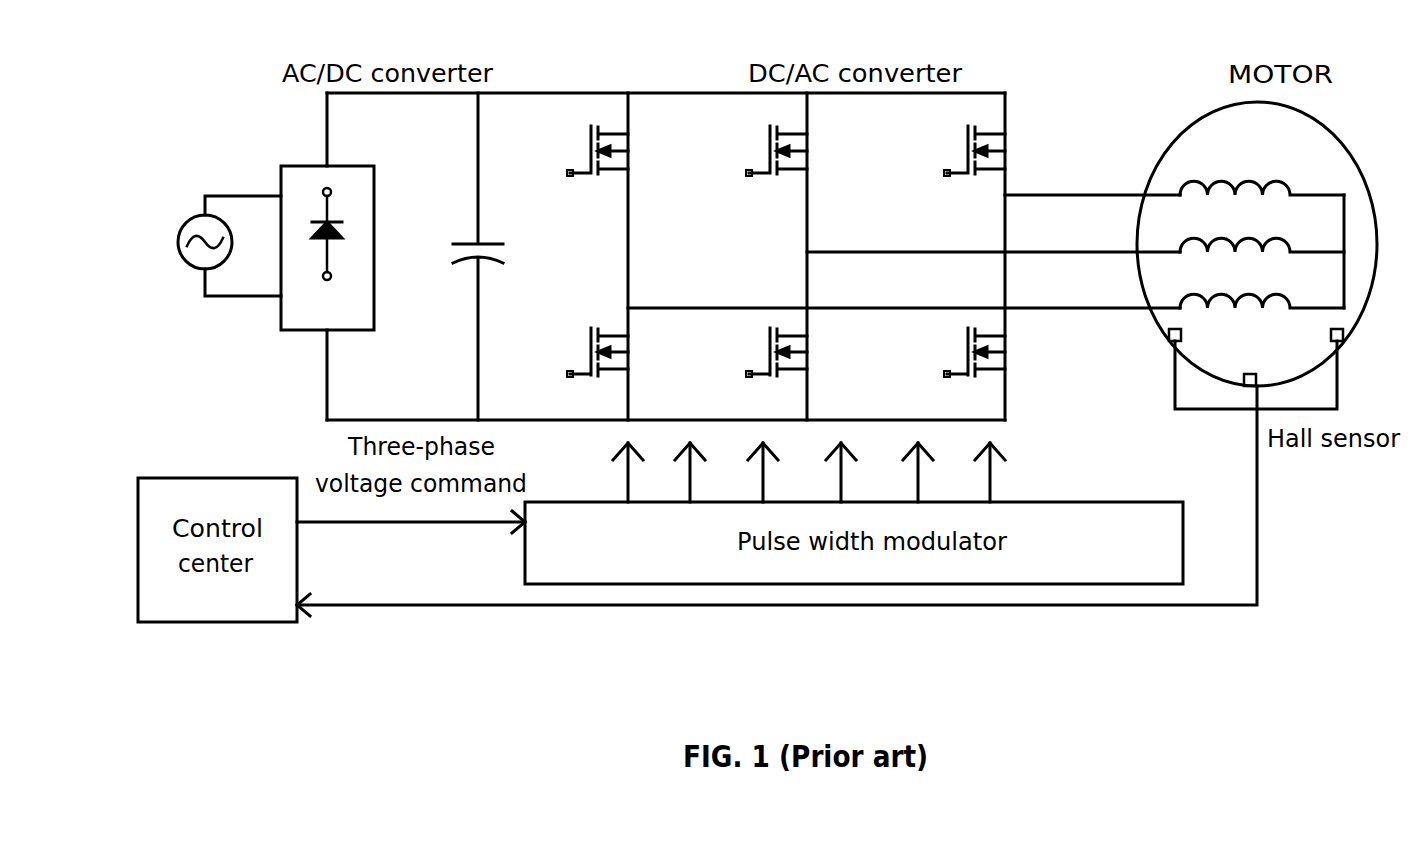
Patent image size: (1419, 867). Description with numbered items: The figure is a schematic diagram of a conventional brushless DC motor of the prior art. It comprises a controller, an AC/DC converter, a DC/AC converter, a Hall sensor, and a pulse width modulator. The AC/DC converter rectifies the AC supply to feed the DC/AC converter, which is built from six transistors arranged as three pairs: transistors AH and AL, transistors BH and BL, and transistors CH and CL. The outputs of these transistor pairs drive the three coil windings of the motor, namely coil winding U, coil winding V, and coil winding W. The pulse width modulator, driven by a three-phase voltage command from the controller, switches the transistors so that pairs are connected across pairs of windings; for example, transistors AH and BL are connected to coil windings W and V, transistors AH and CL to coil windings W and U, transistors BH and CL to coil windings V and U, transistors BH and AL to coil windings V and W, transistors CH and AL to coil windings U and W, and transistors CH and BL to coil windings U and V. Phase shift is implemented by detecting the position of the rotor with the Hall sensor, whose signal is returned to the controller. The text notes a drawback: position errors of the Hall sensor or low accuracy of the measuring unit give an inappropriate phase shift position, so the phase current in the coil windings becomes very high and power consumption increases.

The transistor AH is at (627, 157).
The transistor AL is at (626, 357).
The transistor BH is at (804, 157).
The transistor BL is at (806, 357).
The transistor CH is at (1000, 157).
The transistor CL is at (1003, 357).
The coil winding U is at (1262, 169).
The coil winding V is at (1262, 231).
The coil winding W is at (1262, 289).